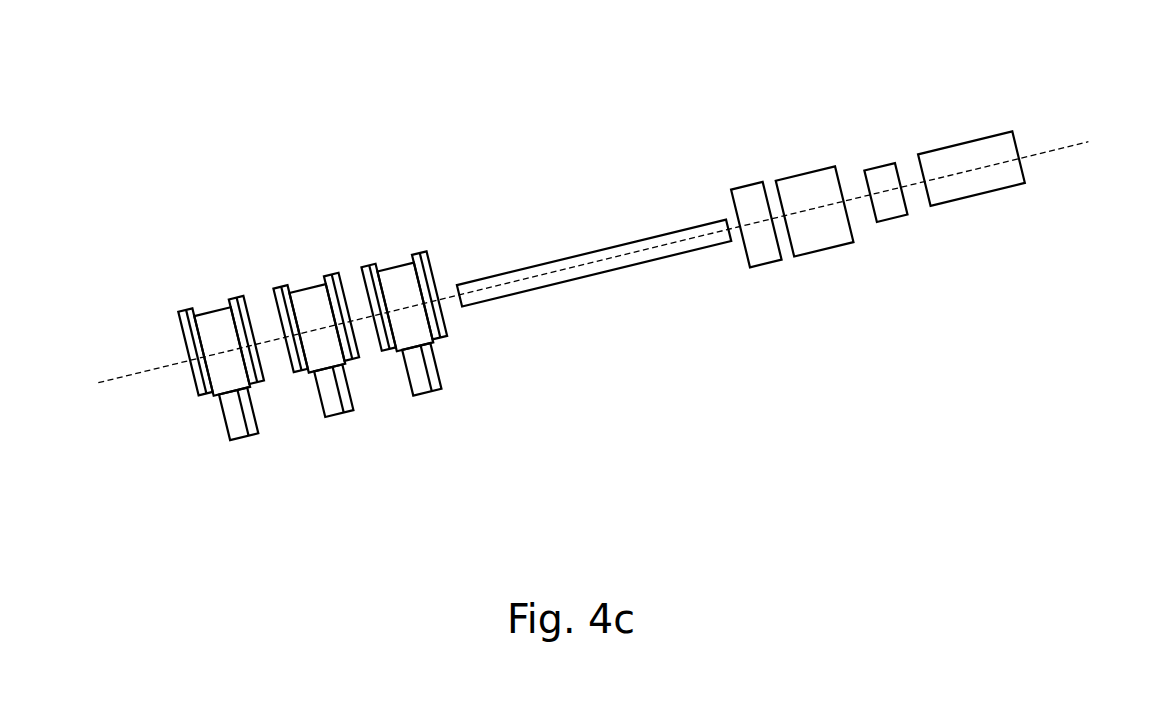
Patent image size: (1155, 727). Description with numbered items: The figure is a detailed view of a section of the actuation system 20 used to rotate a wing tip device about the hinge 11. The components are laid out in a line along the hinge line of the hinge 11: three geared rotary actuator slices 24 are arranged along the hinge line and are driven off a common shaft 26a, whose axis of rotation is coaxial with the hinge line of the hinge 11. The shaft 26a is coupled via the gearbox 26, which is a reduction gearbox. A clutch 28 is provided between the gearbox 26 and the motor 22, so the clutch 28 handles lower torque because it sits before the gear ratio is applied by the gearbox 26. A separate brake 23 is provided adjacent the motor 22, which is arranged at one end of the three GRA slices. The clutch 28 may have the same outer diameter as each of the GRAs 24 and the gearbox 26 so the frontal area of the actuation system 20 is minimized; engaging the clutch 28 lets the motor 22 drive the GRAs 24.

The hinge 11 is at (1068, 172).
The actuation system 20 is at (273, 154).
The motor 22 is at (986, 164).
The brake 23 is at (876, 190).
The geared rotary actuator 24 is at (233, 368).
The gearbox 26 is at (757, 238).
The common shaft 26a is at (618, 260).
The clutch 28 is at (813, 227).